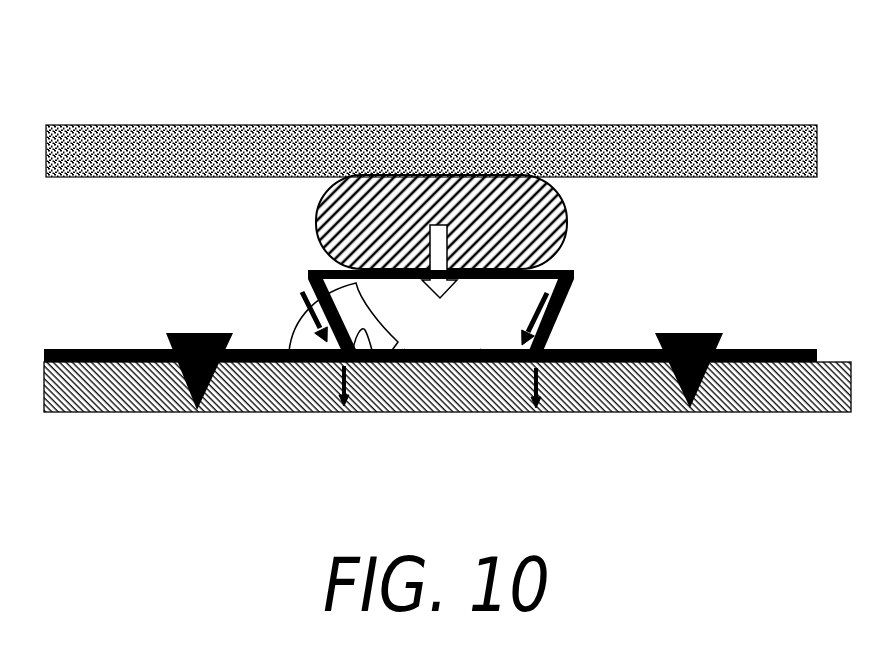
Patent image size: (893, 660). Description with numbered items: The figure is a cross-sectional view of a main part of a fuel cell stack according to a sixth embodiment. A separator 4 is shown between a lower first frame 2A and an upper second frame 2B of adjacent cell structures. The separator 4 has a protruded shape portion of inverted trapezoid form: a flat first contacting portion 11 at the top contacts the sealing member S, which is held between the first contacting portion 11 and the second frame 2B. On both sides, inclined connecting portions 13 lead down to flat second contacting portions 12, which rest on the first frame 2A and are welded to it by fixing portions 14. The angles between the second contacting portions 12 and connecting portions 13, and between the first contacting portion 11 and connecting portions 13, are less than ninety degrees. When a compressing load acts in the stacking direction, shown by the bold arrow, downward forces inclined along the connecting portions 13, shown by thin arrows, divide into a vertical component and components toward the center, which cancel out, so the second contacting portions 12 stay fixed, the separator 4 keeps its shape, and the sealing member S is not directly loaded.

The second frame 2B is at (82, 152).
The first frame 2A is at (172, 387).
The separator 4 is at (807, 350).
The second contacting portion 12 is at (67, 348).
The fixing portion 14 is at (177, 333).
The sealing member S is at (433, 195).
The first contacting portion 11 is at (476, 283).
The connecting portion 13 is at (560, 309).